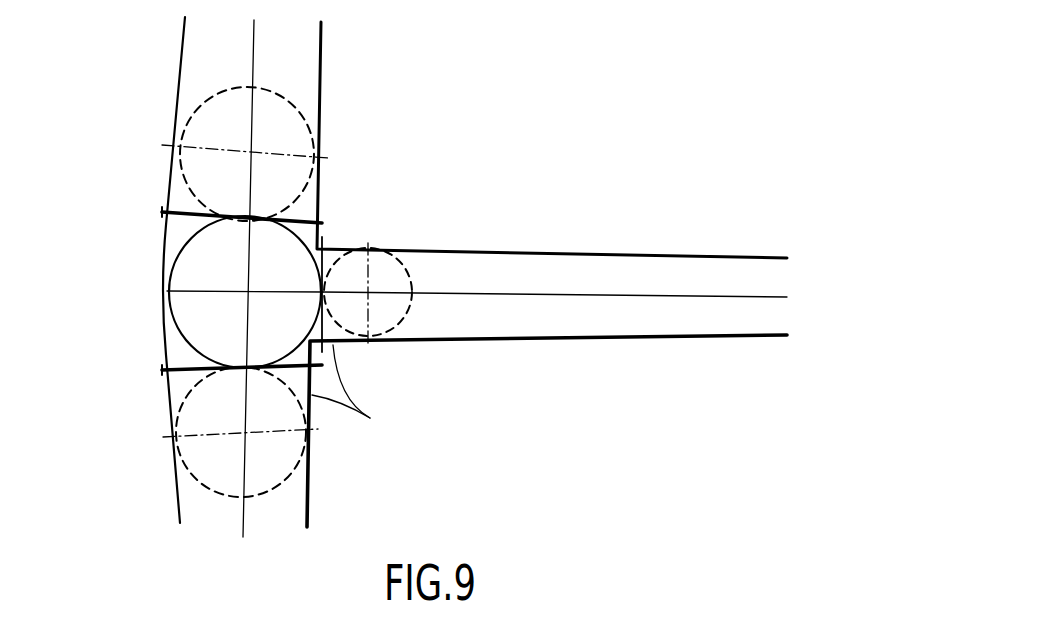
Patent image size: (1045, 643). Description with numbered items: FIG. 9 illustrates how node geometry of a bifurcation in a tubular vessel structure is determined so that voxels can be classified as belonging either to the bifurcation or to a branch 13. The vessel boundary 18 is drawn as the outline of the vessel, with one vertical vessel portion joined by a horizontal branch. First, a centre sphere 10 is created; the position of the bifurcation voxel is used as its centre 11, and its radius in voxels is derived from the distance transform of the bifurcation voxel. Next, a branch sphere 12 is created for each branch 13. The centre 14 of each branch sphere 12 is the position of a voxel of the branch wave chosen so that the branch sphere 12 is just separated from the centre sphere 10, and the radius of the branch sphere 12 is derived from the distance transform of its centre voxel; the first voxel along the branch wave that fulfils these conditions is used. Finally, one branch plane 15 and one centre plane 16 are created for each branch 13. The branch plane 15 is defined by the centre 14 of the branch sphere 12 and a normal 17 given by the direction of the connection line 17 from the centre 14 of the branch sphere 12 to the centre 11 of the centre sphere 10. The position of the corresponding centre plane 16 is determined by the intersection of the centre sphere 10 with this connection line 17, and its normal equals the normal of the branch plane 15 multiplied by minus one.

The centre sphere 10 is at (167, 317).
The centre of the centre sphere 11 is at (245, 291).
The branch sphere 12 is at (288, 292).
The branch 13 is at (178, 82).
The centre of the branch sphere 14 is at (247, 164).
The branch plane 15 is at (203, 148).
The centre plane 16 is at (170, 228).
The connection line 17 is at (253, 50).
The vessel boundary 18 is at (360, 389).